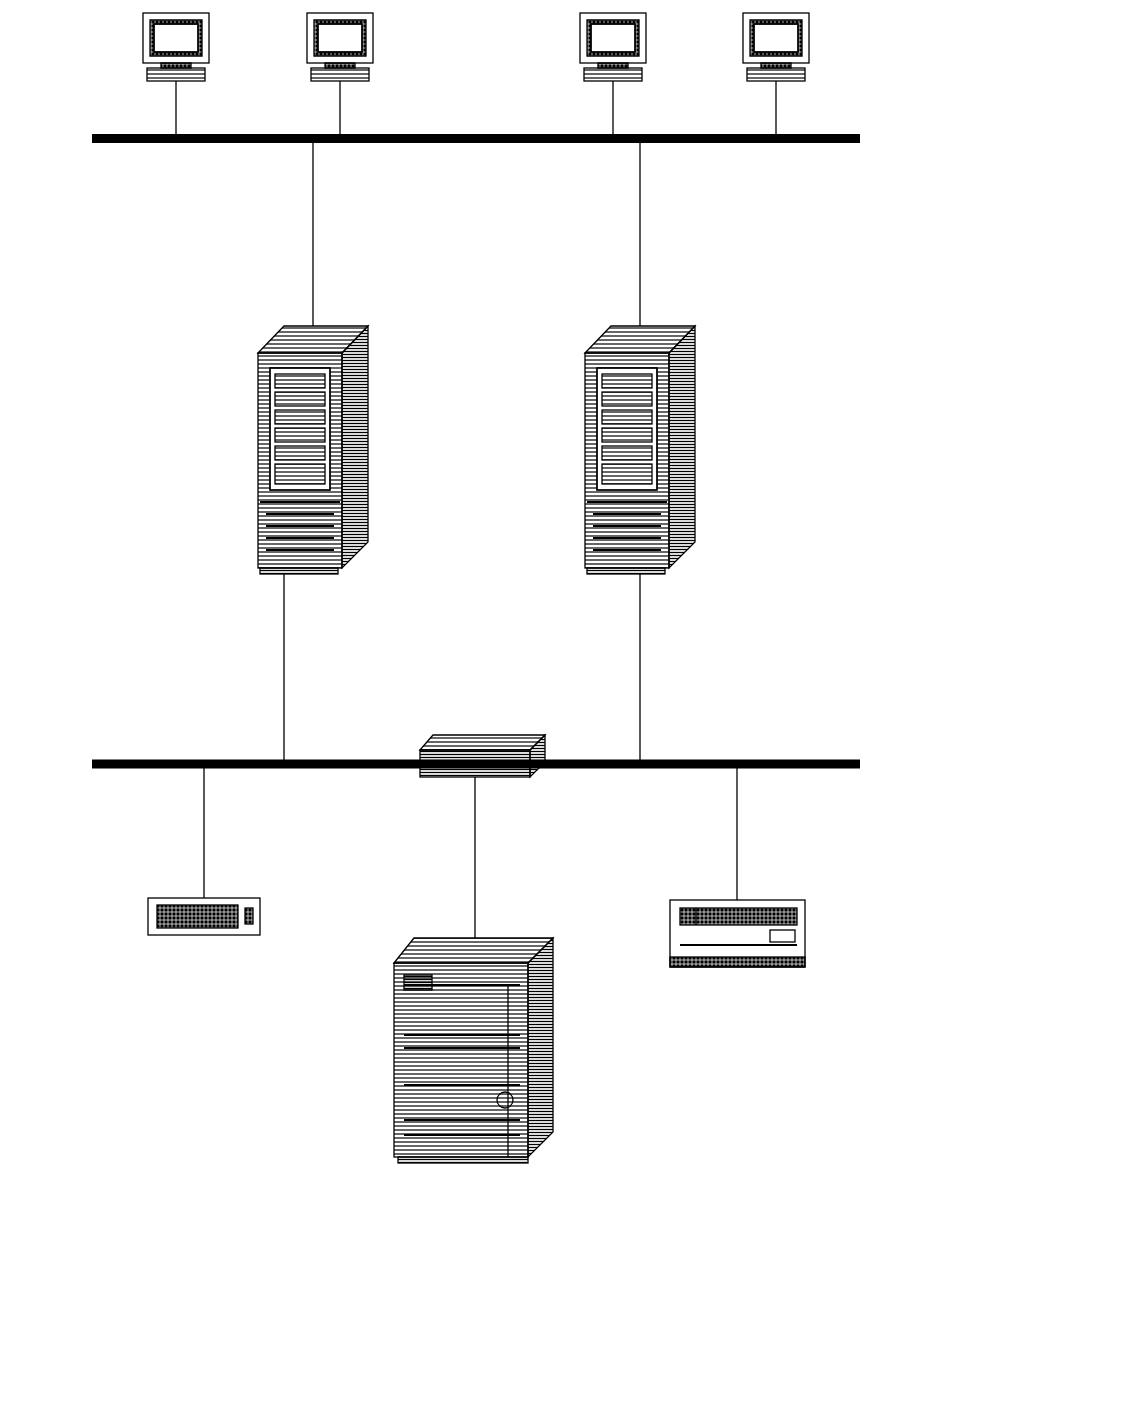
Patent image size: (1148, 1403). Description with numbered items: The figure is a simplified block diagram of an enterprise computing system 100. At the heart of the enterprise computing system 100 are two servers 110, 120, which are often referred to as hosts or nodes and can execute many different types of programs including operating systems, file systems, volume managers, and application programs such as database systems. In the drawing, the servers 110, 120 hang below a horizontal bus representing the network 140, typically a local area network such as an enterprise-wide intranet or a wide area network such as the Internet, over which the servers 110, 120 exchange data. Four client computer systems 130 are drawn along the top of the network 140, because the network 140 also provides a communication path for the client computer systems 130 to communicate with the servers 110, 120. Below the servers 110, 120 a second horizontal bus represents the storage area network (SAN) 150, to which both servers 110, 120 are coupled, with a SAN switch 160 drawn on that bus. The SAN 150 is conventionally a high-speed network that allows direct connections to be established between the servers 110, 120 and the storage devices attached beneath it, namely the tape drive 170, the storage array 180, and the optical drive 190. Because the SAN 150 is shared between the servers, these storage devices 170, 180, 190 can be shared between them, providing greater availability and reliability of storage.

The enterprise computing system 100 is at (774, 1180).
The server 110 is at (258, 440).
The server 120 is at (697, 434).
The client computer systems 130 is at (810, 43).
The network 140 is at (715, 143).
The storage area network (SAN) 150 is at (775, 760).
The SAN switch 160 is at (433, 780).
The tape drive 170 is at (146, 914).
The storage array 180 is at (557, 1047).
The optical drive 190 is at (806, 930).